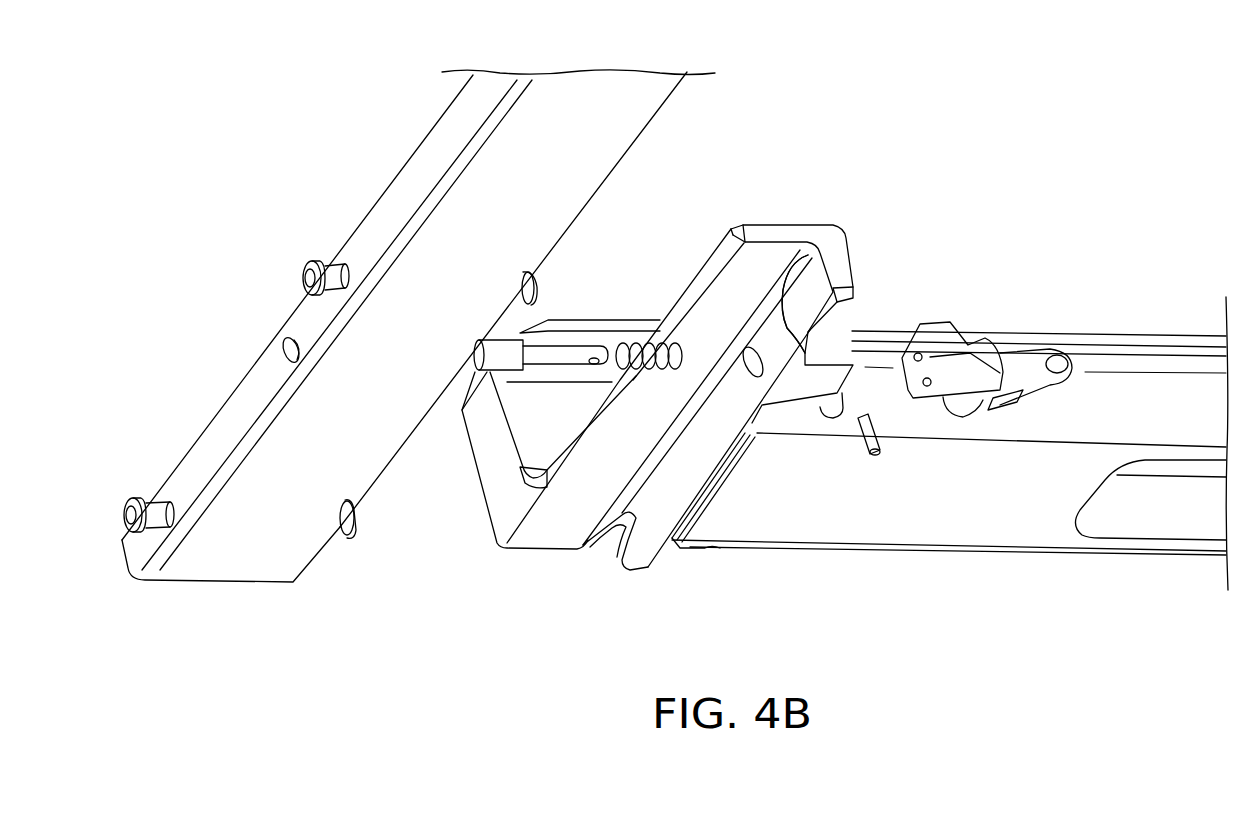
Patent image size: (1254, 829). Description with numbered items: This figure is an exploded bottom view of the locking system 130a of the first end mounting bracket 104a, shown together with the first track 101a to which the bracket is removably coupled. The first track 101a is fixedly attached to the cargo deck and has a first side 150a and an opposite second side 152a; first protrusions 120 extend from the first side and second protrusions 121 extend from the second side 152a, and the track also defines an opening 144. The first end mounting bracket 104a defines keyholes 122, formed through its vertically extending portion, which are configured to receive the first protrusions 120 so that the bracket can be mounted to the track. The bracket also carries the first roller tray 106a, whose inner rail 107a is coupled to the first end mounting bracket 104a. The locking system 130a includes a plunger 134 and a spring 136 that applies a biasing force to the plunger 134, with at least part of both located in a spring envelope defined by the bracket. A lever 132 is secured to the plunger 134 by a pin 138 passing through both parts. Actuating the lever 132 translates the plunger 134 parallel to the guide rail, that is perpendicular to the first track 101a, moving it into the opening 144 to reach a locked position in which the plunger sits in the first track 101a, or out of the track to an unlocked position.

The first track 101a is at (526, 228).
The first side 150a is at (661, 105).
The second side 152a is at (387, 220).
The opening 144 is at (287, 349).
The second protrusions 121 is at (126, 510).
The first protrusions 120 is at (343, 538).
The locking system 130a is at (680, 380).
The keyholes 122 is at (804, 290).
The plunger 134 is at (475, 370).
The spring 136 is at (643, 343).
The first end mounting bracket 104a is at (500, 508).
The first roller tray 106a is at (1020, 501).
The inner rail 107a is at (1142, 385).
The lever 132 is at (965, 333).
The pin 138 is at (870, 456).